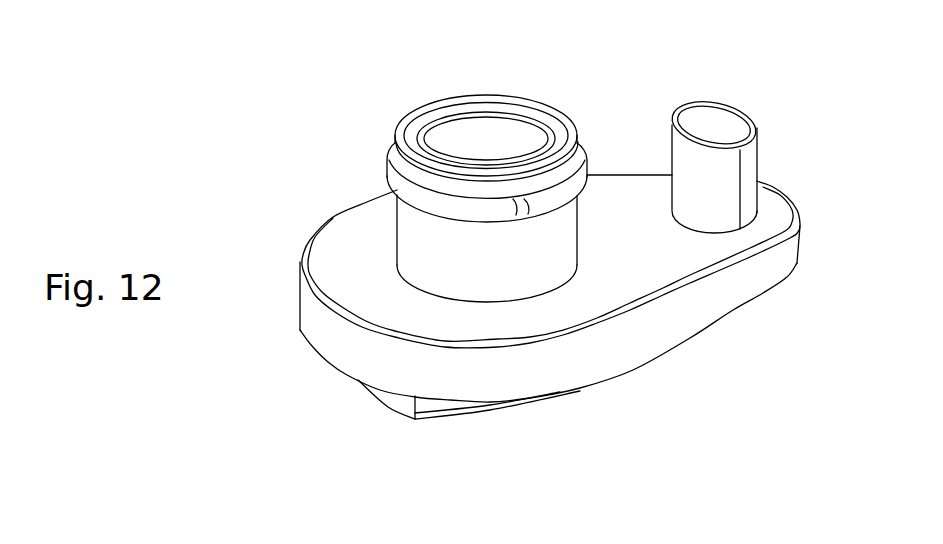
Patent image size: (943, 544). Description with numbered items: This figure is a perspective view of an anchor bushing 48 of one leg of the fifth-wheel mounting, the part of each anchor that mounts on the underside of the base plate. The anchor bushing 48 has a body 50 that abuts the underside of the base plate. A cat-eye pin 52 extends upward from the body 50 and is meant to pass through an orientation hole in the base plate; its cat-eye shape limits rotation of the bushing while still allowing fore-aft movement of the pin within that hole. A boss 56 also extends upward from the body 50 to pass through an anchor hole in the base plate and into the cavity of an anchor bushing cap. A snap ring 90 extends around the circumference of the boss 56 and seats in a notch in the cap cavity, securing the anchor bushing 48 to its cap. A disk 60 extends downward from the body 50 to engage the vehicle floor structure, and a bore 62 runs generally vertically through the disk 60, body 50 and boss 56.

The anchor bushing 48 is at (655, 33).
The body 50 is at (300, 331).
The cat-eye pin 52 is at (735, 108).
The boss 56 is at (397, 232).
The disk 60 is at (388, 407).
The bore 62 is at (438, 118).
The snap ring 90 is at (387, 177).